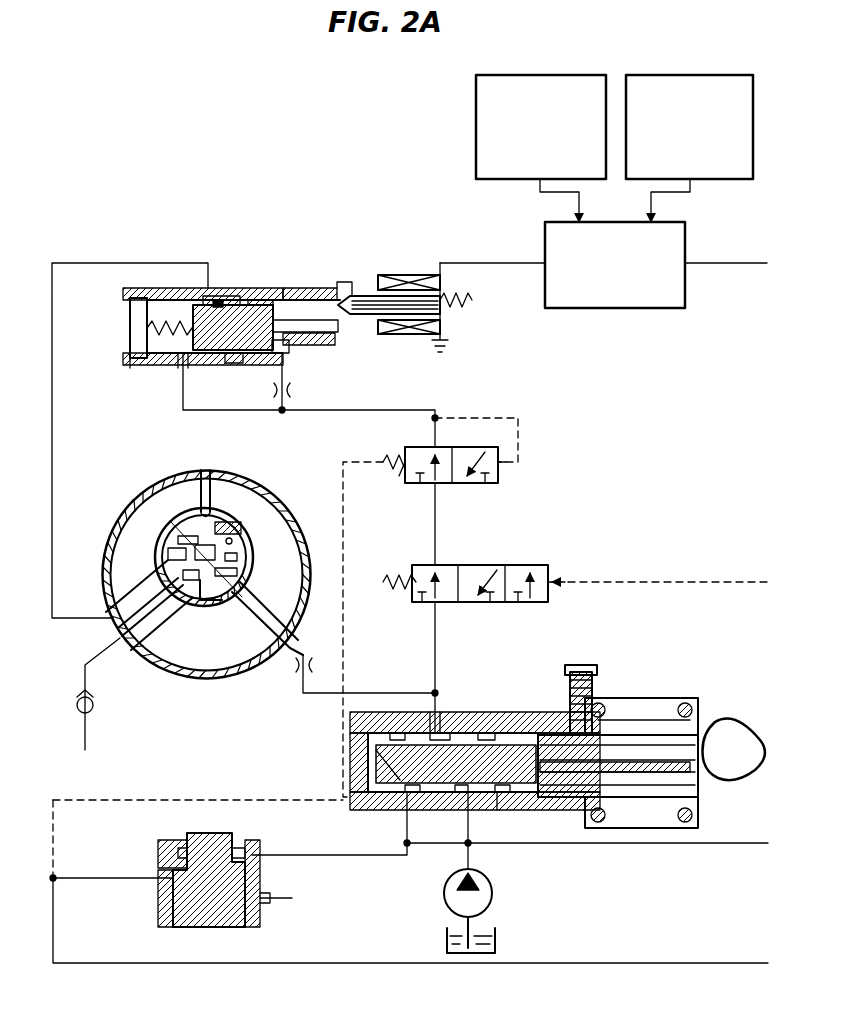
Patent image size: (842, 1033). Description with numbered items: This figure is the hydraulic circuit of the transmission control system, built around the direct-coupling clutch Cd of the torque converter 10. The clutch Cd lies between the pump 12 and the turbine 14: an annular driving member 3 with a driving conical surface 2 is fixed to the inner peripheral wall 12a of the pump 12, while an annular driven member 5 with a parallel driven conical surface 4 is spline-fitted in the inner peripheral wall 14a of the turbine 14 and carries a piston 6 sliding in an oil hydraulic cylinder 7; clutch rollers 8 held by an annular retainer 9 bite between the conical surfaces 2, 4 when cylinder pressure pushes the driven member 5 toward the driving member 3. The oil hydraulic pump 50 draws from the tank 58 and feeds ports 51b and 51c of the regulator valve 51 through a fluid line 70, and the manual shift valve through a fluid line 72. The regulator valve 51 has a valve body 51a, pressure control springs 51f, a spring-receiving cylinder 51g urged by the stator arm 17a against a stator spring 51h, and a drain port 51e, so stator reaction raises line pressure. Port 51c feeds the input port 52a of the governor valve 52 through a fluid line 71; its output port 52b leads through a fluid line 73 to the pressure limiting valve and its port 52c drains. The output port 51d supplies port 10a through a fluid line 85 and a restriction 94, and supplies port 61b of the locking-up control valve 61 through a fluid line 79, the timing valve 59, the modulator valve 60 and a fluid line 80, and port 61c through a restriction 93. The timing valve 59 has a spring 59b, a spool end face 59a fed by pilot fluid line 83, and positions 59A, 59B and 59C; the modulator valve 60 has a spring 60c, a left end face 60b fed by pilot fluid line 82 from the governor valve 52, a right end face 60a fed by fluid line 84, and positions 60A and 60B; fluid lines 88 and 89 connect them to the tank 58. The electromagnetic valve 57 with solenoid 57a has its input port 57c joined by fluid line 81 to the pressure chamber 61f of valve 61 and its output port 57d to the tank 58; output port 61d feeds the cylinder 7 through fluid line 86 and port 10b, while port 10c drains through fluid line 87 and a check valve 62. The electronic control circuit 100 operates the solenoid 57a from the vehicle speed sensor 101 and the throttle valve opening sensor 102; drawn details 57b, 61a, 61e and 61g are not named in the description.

The driving conical surface 2 is at (238, 530).
The annular driving member 3 is at (233, 541).
The driven conical surface 4 is at (228, 578).
The annular driven member 5 is at (190, 582).
The piston 6 is at (180, 540).
The oil hydraulic cylinder 7 is at (170, 554).
The clutch rollers 8 is at (210, 600).
The annular retainer 9 is at (238, 558).
The torque converter 10 is at (240, 470).
The port of torque converter 10a is at (298, 650).
The port of torque converter 10b is at (115, 618).
The port of torque converter 10c is at (133, 645).
The pump 12 is at (290, 522).
The inner peripheral wall of pump 12a is at (208, 512).
The turbine 14 is at (163, 533).
The inner peripheral wall of turbine 14a is at (180, 522).
The stator arm 17a is at (735, 765).
The oil hydraulic pump 50 is at (493, 893).
The regulator valve 51 is at (595, 690).
The valve body of regulator valve 51a is at (510, 745).
The port of regulator valve 51b is at (463, 805).
The port of regulator valve 51c is at (400, 805).
The output port of regulator valve 51d is at (437, 730).
The port of regulator valve 51e is at (500, 800).
The pressure control springs 51f is at (655, 790).
The spring-receiving cylinder 51g is at (665, 735).
The stator spring 51h is at (678, 825).
The governor valve 52 is at (190, 935).
The input port of governor valve 52a is at (250, 853).
The output port of governor valve 52b is at (172, 870).
The port of governor valve 52c is at (291, 897).
The electromagnetic valve 57 is at (388, 274).
The solenoid 57a is at (428, 275).
The return spring 57b is at (456, 308).
The input port of electromagnetic valve 57c is at (332, 296).
The output port of electromagnetic valve 57d is at (352, 318).
The tank 58 is at (495, 945).
The timing valve 59 is at (500, 560).
The position of timing valve 59A is at (430, 565).
The fluid-supply interrupting position 59B is at (475, 565).
The position of timing valve 59C is at (540, 565).
The end face of timing valve spool 59a is at (550, 588).
The spring of timing valve 59b is at (388, 590).
The modulator valve 60 is at (404, 480).
The position of modulator valve 60A is at (428, 447).
The position of modulator valve 60B is at (470, 446).
The right end face of modulator valve spool 60a is at (503, 462).
The left end face of modulator valve spool 60b is at (388, 458).
The spring of modulator valve 60c is at (398, 468).
The locking-up control valve 61 is at (128, 345).
The spool 61a is at (226, 300).
The port of locking-up control valve 61b is at (182, 365).
The port of locking-up control valve 61c is at (235, 363).
The output port of locking-up control valve 61d is at (216, 300).
The housing 61e is at (133, 365).
The pressure chamber of locking-up control valve 61f is at (262, 300).
The spring 61g is at (145, 328).
The check valve 62 is at (77, 705).
The fluid line 70 is at (462, 855).
The fluid line 71 is at (342, 856).
The fluid line 72 is at (730, 845).
The fluid line 73 is at (325, 963).
The fluid line 79 is at (440, 690).
The fluid line 80 is at (288, 412).
The fluid line 81 is at (288, 345).
The pilot fluid line 82 is at (205, 800).
The pilot fluid line 83 is at (645, 582).
The fluid line 84 is at (480, 418).
The fluid line 85 is at (405, 693).
The fluid line 86 is at (52, 462).
The fluid line 87 is at (85, 665).
The fluid line 88 is at (420, 608).
The fluid line 89 is at (420, 484).
The restriction 93 is at (292, 392).
The restriction 94 is at (296, 668).
The electronic control circuit 100 is at (638, 308).
The vehicle speed sensor 101 is at (540, 80).
The throttle valve opening sensor 102 is at (660, 80).
The direct-coupling clutch Cd is at (195, 550).